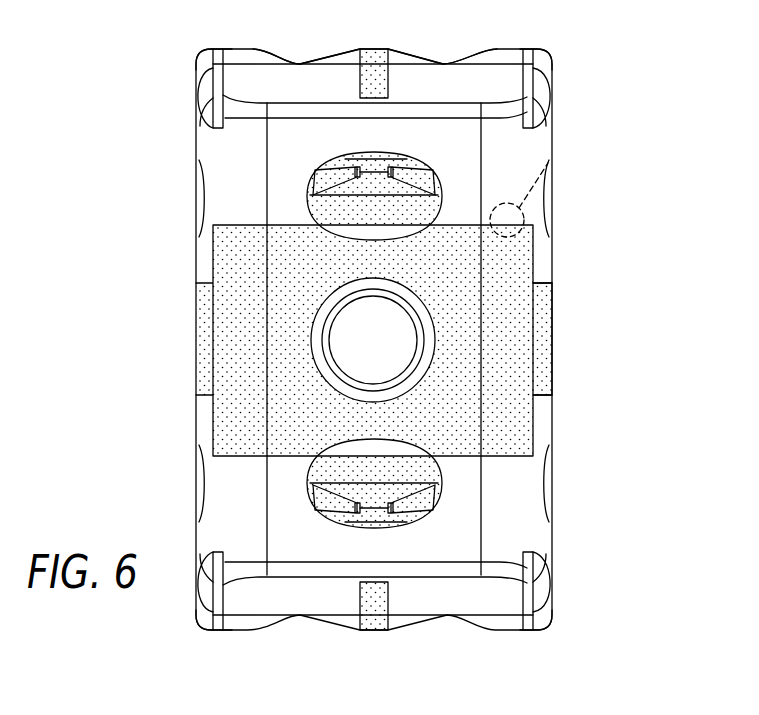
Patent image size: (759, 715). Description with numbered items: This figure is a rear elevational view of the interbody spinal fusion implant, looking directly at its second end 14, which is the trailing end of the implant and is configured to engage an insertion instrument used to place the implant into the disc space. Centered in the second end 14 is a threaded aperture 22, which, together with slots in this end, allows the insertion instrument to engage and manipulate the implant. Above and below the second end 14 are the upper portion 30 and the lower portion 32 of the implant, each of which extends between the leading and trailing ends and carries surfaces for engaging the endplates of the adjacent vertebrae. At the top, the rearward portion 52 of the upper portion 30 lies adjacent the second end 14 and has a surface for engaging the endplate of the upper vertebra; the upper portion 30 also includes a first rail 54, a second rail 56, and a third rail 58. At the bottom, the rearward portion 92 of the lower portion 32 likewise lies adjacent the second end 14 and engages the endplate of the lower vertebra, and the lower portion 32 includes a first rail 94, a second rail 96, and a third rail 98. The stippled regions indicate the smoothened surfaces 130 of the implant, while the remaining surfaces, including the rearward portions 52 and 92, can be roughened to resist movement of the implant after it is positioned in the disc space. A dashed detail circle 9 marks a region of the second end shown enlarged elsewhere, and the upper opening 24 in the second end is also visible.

The detail circle for FIG. 9 is at (548, 163).
The second end 14 is at (300, 292).
The threaded aperture 22 is at (423, 338).
The upper opening 24 is at (410, 152).
The upper portion 30 is at (375, 49).
The lower portion 32 is at (95, 0).
The rearward portion 52 is at (513, 80).
The first rail 54 is at (378, 77).
The second rail 56 is at (232, 50).
The third rail 58 is at (527, 52).
The rearward portion 92 is at (507, 600).
The first rail 94 is at (368, 608).
The second rail 96 is at (212, 630).
The third rail 98 is at (527, 628).
The smoothened surfaces 130 is at (508, 270).